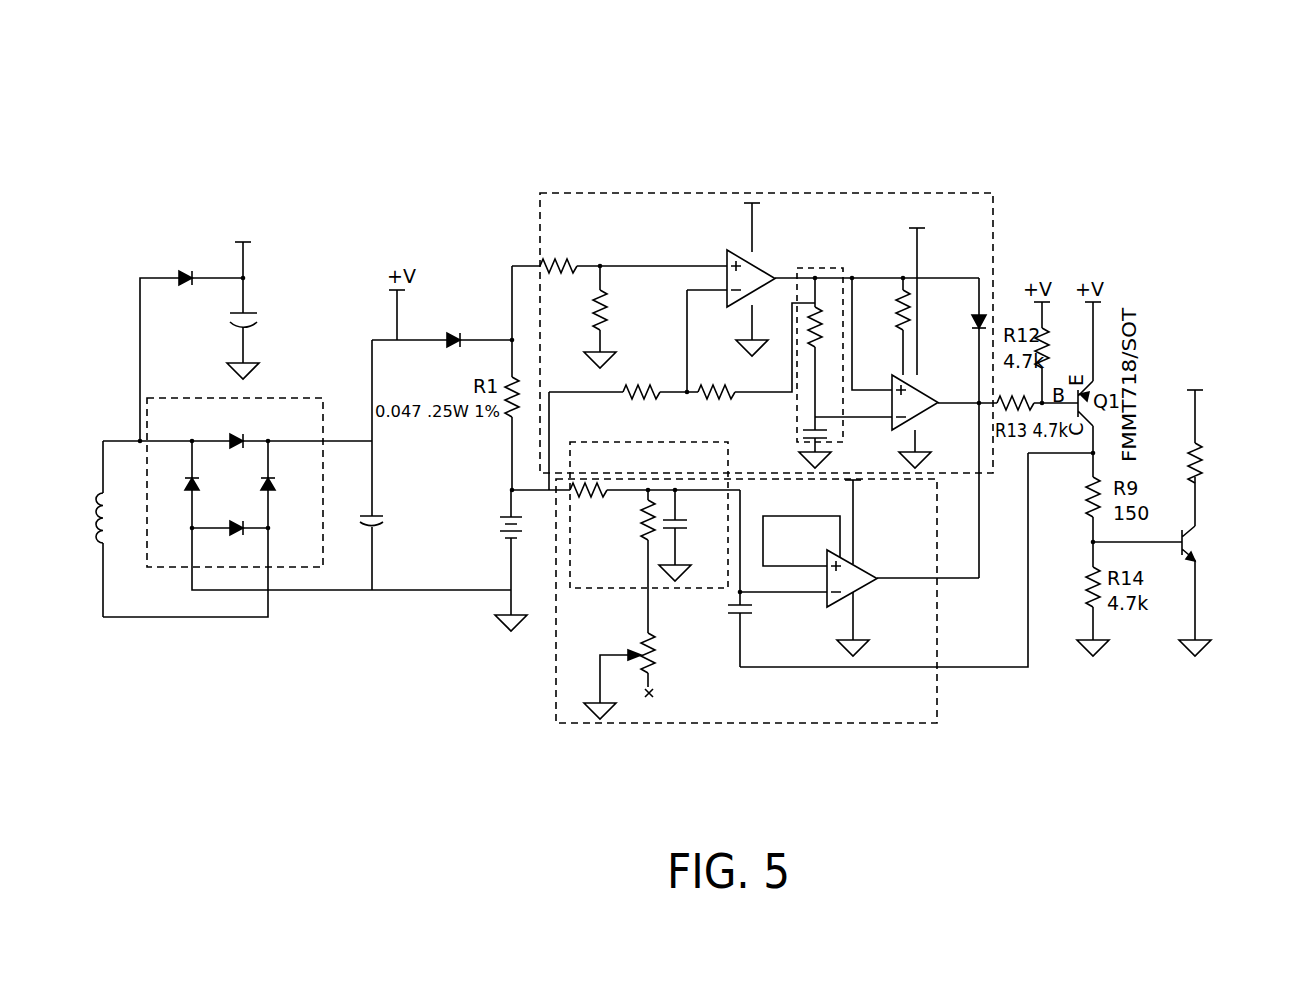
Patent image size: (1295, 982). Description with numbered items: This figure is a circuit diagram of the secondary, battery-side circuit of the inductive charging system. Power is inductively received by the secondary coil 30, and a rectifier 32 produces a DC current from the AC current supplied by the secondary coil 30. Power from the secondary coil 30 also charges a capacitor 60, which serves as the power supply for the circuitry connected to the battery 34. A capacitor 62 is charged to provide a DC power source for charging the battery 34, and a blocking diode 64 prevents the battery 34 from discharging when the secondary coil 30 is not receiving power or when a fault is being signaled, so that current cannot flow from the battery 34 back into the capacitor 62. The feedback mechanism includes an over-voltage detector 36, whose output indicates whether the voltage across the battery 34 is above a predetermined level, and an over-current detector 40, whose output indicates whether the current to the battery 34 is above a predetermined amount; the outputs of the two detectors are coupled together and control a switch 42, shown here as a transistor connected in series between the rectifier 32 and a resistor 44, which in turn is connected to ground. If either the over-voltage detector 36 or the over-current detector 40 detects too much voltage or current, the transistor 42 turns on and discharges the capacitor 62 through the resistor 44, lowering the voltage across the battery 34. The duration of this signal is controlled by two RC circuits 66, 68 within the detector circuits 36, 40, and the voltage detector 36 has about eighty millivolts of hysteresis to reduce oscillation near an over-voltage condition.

The secondary coil 30 is at (96, 496).
The rectifier 32 is at (290, 568).
The battery 34 is at (500, 541).
The over-voltage detector 36 is at (658, 723).
The over-current detector 40 is at (982, 193).
The switch 42 is at (1195, 534).
The resistor 44 is at (1197, 447).
The capacitor 60 is at (262, 312).
The capacitor 62 is at (376, 512).
The blocking diode 64 is at (443, 338).
The RC circuit 66 is at (838, 266).
The RC circuit 68 is at (693, 590).